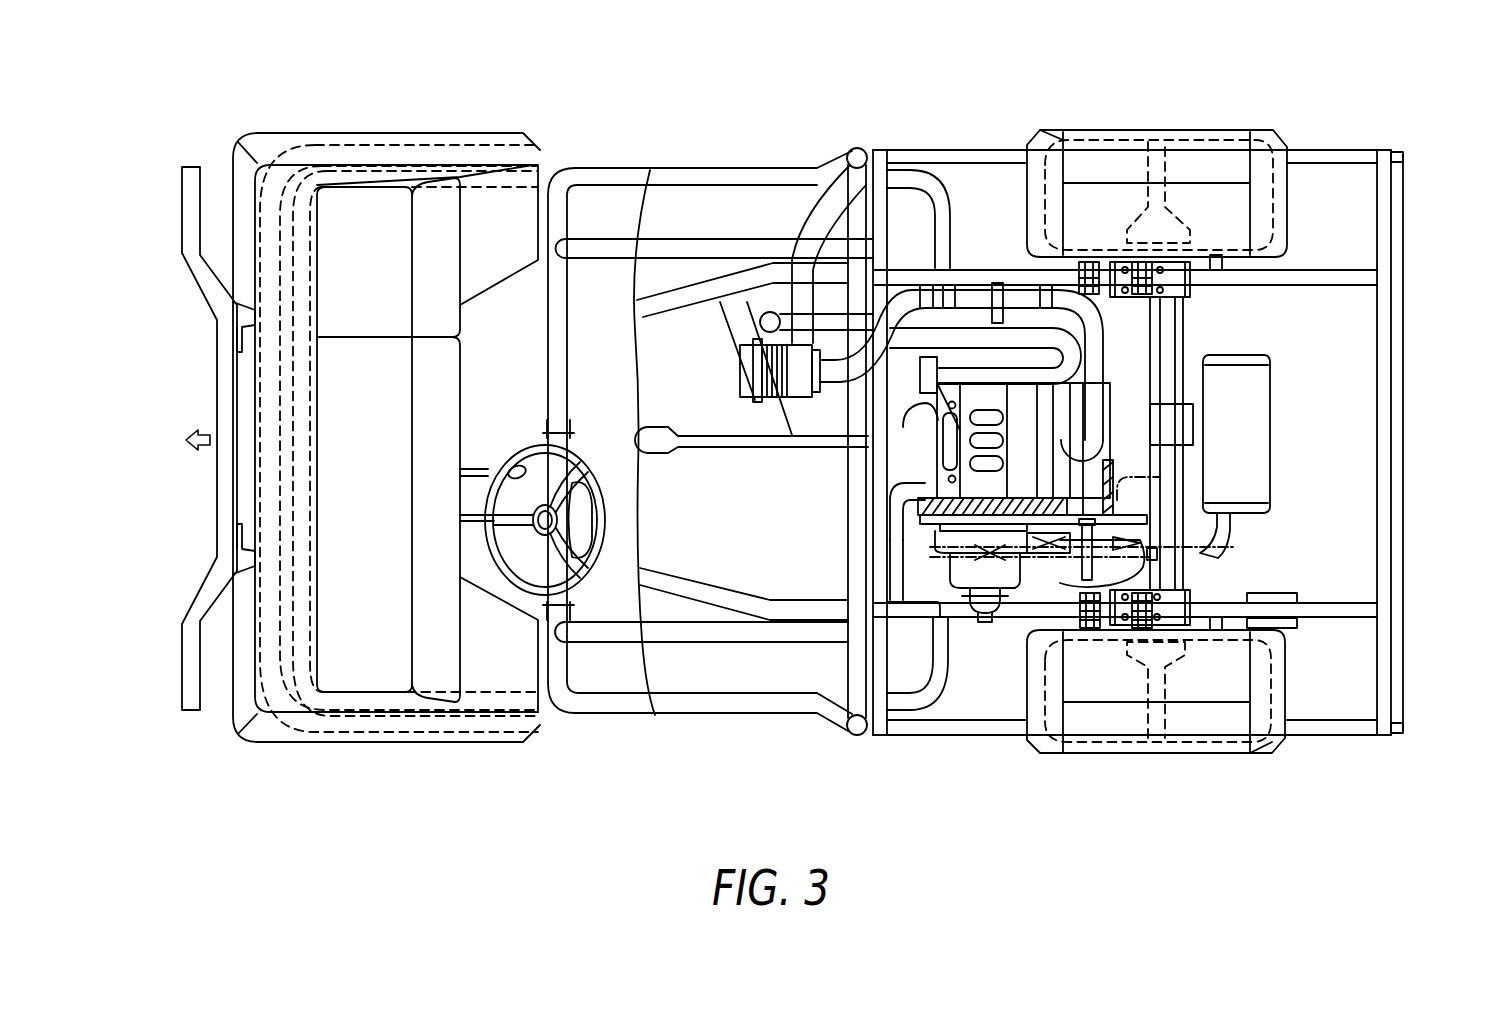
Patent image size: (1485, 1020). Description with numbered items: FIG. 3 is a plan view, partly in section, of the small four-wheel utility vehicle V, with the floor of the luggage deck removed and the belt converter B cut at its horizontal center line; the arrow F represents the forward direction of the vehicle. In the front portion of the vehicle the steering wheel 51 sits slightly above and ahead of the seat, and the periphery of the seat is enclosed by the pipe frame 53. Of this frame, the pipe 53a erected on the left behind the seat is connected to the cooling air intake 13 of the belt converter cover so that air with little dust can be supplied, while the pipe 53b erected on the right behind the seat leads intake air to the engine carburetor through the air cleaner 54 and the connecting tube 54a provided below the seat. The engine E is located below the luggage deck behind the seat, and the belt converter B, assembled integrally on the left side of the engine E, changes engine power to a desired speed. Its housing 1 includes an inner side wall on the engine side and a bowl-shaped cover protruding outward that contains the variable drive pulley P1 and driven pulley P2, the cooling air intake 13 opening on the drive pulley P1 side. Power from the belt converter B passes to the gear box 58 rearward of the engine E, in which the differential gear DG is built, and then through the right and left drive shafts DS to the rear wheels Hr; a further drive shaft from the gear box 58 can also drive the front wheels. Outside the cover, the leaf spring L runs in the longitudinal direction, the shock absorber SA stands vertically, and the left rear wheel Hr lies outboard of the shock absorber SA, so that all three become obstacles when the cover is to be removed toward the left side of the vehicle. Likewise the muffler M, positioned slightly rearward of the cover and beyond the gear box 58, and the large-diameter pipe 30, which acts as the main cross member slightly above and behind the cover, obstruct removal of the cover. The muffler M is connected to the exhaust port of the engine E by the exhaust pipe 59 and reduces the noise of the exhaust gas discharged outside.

The small four-wheel utility vehicle V is at (630, 165).
The arrow indicating forward direction F is at (190, 440).
The steering wheel 51 is at (513, 465).
The pipe frame 53 is at (556, 163).
The pipe 53a is at (857, 734).
The pipe 53b is at (856, 148).
The air cleaner 54 is at (745, 370).
The connecting tube 54a is at (805, 220).
The engine E is at (980, 393).
The gear box 58 is at (1117, 395).
The belt converter B is at (915, 558).
The drive pulley P1 is at (960, 568).
The cooling air intake 13 is at (1043, 572).
The housing 1 is at (1088, 567).
The driven pulley P2 is at (1000, 612).
The rear wheel Hr is at (1043, 733).
The shock absorber SA is at (1102, 632).
The leaf spring L is at (1233, 613).
The drive shaft DS is at (1157, 322).
The differential gear DG is at (1178, 422).
The muffler M is at (1257, 470).
The exhaust pipe 59 is at (1222, 545).
The pipe 30 is at (1172, 574).